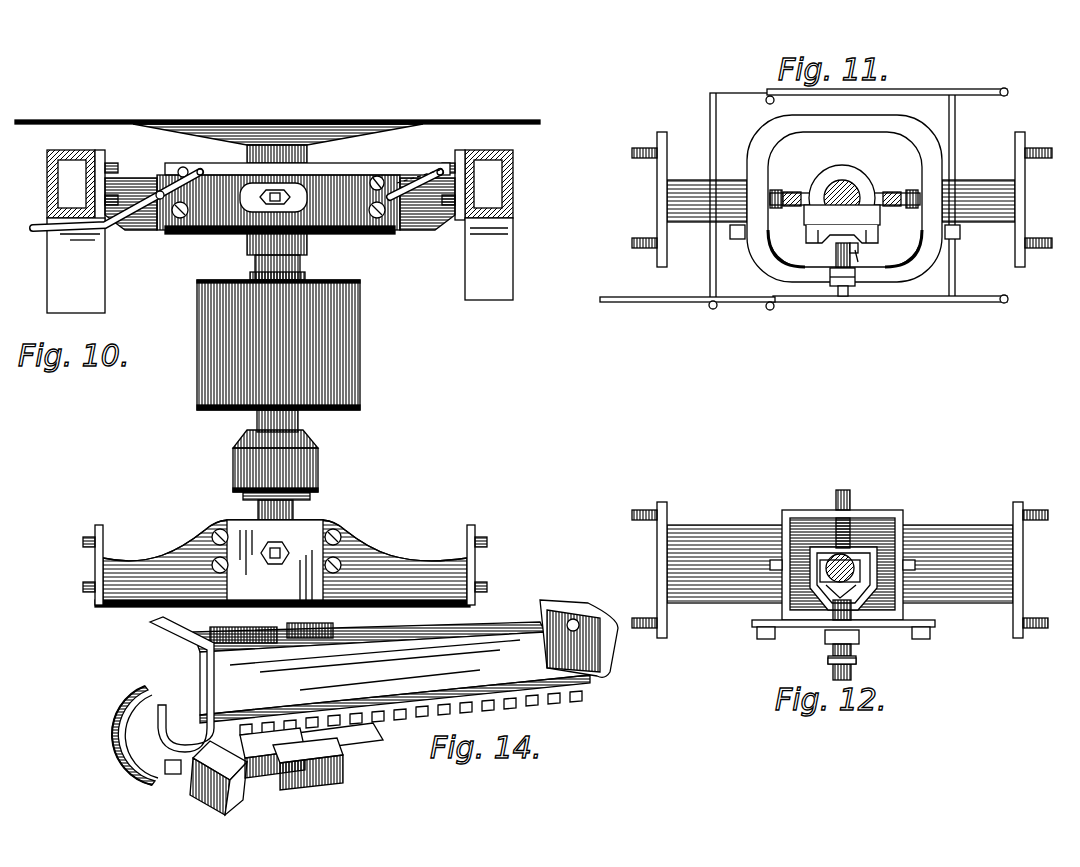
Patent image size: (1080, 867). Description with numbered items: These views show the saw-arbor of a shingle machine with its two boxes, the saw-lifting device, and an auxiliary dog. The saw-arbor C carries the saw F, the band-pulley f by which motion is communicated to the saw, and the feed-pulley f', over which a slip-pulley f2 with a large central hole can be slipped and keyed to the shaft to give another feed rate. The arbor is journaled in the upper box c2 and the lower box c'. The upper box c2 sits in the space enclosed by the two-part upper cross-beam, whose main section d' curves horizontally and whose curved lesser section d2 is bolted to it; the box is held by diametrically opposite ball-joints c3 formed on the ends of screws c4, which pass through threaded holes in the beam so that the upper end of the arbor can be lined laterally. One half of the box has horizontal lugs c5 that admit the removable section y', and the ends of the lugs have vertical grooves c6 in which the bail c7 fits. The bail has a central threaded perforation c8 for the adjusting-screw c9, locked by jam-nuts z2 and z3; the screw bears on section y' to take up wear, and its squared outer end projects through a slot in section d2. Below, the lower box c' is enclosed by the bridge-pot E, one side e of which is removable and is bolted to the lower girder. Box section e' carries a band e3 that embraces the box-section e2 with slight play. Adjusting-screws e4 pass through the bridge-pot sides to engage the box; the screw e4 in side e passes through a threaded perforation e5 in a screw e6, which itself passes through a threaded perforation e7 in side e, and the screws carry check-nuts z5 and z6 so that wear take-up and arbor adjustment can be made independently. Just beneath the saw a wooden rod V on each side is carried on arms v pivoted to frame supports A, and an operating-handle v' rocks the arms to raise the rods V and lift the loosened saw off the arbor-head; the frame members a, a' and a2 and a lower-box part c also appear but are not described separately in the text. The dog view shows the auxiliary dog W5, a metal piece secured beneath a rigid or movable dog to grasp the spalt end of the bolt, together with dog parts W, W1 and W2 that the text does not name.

In FIG. 10, the saw F is at (277, 134).
In FIG. 10, the frame standards A is at (47, 187).
In FIG. 10, the wooden rod or bar V is at (326, 172).
In FIG. 11, the wooden rod or bar V is at (887, 203).
In FIG. 10, the upper cross-beam main section d' is at (118, 187).
In FIG. 10, the lesser section of cross-beam d2 is at (175, 230).
In FIG. 10, the arms v is at (308, 183).
In FIG. 11, the arms v is at (849, 193).
In FIG. 10, the operating-handle v' is at (141, 219).
In FIG. 11, the operating-handle v' is at (687, 306).
In FIG. 10, the saw-arbor C is at (300, 278).
In FIG. 10, the band-pulley f is at (289, 356).
In FIG. 10, the slip-pulley f2 is at (240, 467).
In FIG. 10, the feed-pulley f' is at (287, 506).
In FIG. 10, the base frame a is at (285, 563).
In FIG. 12, the base frame a is at (840, 570).
In FIG. 10, the removable side of bridge-pot e is at (276, 559).
In FIG. 12, the removable side of bridge-pot e is at (843, 636).
In FIG. 10, the nut c is at (281, 547).
In FIG. 11, the frame plate a' is at (842, 195).
In FIG. 11, the loop casing a2 is at (766, 250).
In FIG. 11, the upper box c2 is at (850, 170).
In FIG. 11, the ball-joints c3 is at (795, 192).
In FIG. 11, the screws c4 is at (844, 205).
In FIG. 11, the removable box-section y' is at (858, 214).
In FIG. 11, the lugs c5 is at (806, 232).
In FIG. 11, the vertical grooves c6 is at (880, 232).
In FIG. 11, the bail c7 is at (831, 254).
In FIG. 11, the jam-nut z2 is at (858, 248).
In FIG. 11, the jam-nut z3 is at (835, 276).
In FIG. 11, the central threaded perforation c8 is at (856, 250).
In FIG. 11, the adjusting-screw c9 is at (845, 290).
In FIG. 12, the bridge-pot E is at (810, 515).
In FIG. 12, the adjusting-screws e4 is at (822, 675).
In FIG. 12, the lower box c' is at (847, 563).
In FIG. 12, the lower box section e' is at (840, 563).
In FIG. 12, the box-section e2 is at (846, 589).
In FIG. 12, the band e3 is at (836, 602).
In FIG. 12, the threaded perforation e5 is at (833, 650).
In FIG. 12, the check-nut z6 is at (855, 643).
In FIG. 12, the threaded perforation e7 is at (861, 647).
In FIG. 12, the screw e6 is at (860, 660).
In FIG. 12, the check-nut z5 is at (852, 661).
In FIG. 14, the mold block W is at (183, 716).
In FIG. 14, the mold block W1 is at (272, 753).
In FIG. 14, the mold block W2 is at (308, 764).
In FIG. 14, the auxiliary dogs W5 is at (370, 726).